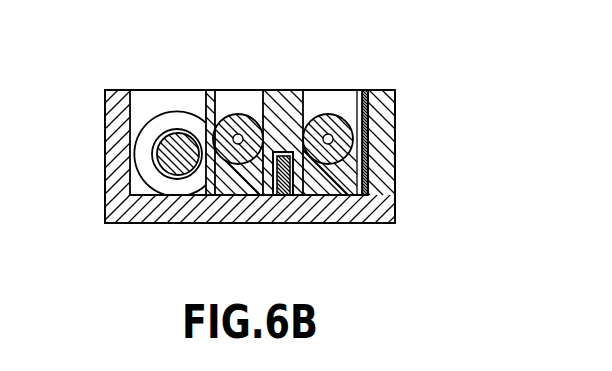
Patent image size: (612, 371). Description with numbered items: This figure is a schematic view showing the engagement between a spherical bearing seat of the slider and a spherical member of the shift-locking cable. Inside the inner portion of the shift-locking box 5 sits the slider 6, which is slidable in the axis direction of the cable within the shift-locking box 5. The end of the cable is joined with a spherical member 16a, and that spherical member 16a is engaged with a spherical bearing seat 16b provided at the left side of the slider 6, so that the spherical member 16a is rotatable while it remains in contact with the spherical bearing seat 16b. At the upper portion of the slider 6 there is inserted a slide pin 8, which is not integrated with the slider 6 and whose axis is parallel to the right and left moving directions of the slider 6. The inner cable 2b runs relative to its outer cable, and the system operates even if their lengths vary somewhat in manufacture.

The shift-locking box 5 is at (383, 180).
The slider 6 is at (276, 100).
The slide pin 8 is at (179, 143).
The inner cable 2b is at (324, 130).
The spherical member 16a is at (333, 119).
The spherical bearing seat 16b is at (323, 160).